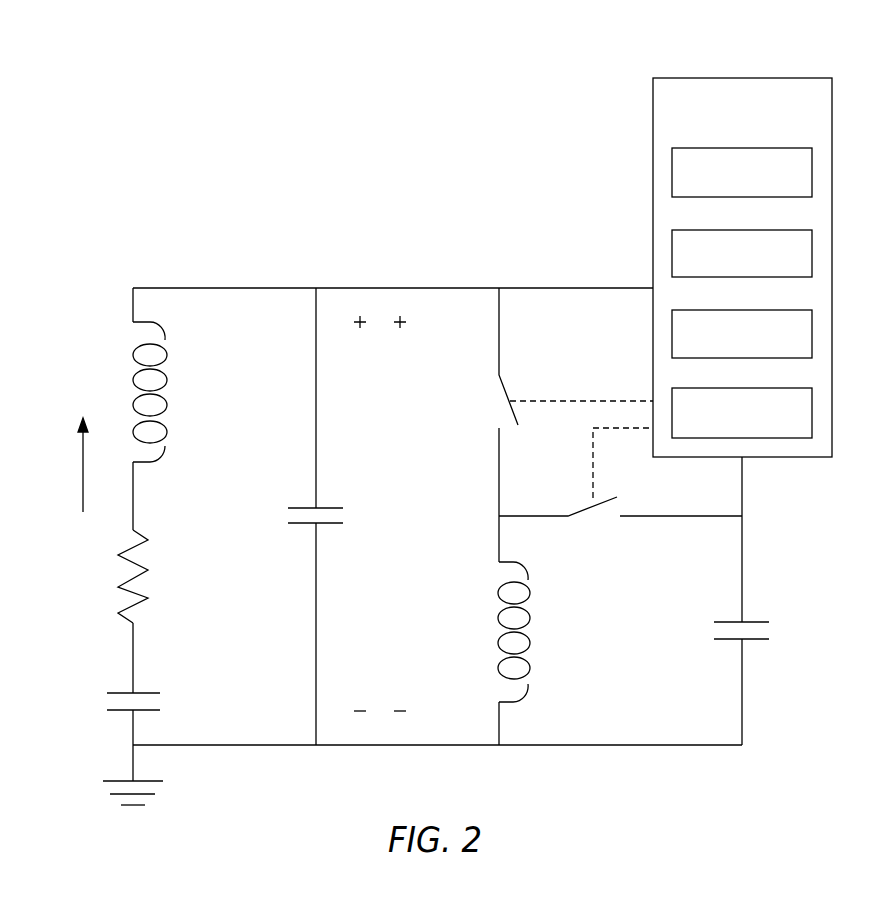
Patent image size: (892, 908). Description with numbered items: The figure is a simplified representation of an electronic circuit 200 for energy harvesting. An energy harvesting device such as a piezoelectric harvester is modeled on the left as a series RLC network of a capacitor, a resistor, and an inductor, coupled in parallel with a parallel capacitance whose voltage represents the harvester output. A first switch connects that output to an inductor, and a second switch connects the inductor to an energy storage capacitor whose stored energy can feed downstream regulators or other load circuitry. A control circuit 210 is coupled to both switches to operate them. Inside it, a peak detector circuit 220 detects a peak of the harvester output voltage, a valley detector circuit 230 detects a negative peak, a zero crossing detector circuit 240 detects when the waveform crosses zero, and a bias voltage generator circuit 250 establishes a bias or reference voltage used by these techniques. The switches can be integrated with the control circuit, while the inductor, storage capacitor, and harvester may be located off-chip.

The electronic circuit 200 is at (133, 96).
The control circuit 210 is at (743, 78).
The peak detector circuit 220 is at (743, 148).
The valley detector circuit 230 is at (743, 230).
The zero crossing detector circuit 240 is at (743, 310).
The bias voltage generator circuit 250 is at (743, 388).